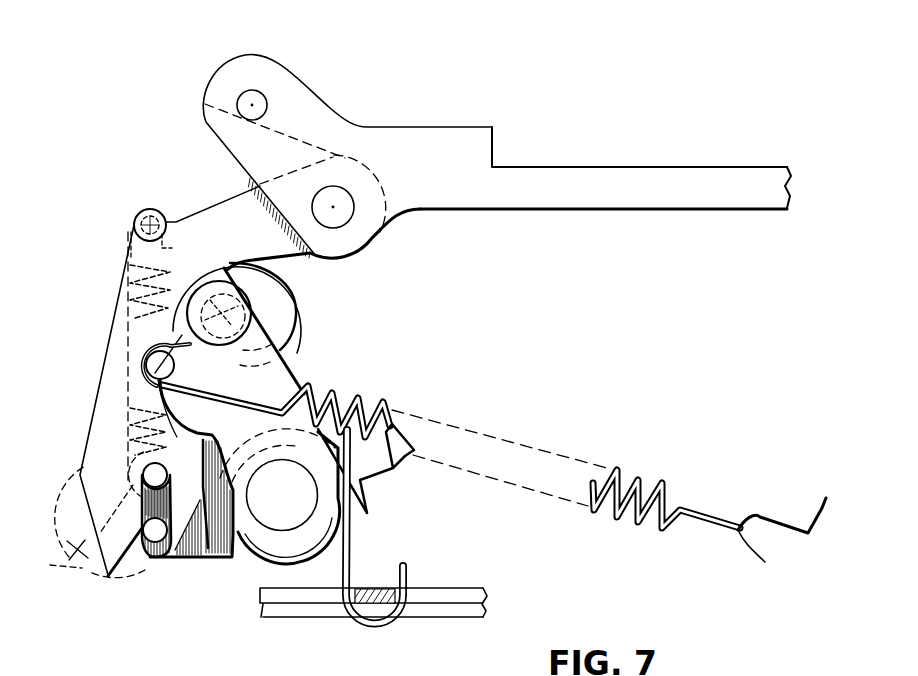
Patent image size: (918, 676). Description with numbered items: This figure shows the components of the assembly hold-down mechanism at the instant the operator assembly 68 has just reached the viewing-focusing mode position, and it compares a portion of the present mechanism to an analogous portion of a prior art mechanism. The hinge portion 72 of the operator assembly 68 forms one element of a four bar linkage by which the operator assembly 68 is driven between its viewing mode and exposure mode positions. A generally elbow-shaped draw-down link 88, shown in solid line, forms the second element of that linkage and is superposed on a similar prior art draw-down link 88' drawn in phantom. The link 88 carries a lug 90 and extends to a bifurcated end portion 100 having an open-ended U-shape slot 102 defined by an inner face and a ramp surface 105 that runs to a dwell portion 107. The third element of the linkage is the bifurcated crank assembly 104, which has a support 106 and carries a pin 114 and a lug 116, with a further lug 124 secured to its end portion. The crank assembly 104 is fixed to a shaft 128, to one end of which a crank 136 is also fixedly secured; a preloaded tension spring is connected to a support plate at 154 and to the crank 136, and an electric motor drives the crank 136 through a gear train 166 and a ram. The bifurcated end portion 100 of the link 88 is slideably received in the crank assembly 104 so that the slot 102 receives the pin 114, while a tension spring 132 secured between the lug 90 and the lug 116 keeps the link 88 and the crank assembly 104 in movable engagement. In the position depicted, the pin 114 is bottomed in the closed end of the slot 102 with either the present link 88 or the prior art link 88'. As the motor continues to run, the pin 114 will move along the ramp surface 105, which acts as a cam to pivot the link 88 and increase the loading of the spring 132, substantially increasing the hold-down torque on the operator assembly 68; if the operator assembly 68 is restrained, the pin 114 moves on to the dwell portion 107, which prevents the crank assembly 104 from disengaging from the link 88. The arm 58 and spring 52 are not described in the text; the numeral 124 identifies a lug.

The hinge portion 72 is at (232, 52).
The operator assembly 68 is at (547, 150).
The arm 58 is at (692, 176).
The lug 90 is at (150, 210).
The draw-down link 88 is at (107, 400).
The prior art draw-down link 88' is at (56, 556).
The tension spring 132 is at (125, 268).
The gear train 166 is at (226, 278).
The crank 136 is at (274, 373).
The U-shape slot 102 is at (178, 560).
The support 106 is at (170, 513).
The bifurcated crank assembly 104 is at (140, 496).
The ramp surface 105 is at (158, 506).
The pin 114 is at (166, 466).
The lug 116 is at (153, 544).
The dwell portion 107 is at (111, 578).
The bifurcated end portion 100 is at (78, 485).
The lug 124 is at (366, 468).
The shaft 128 is at (297, 513).
The tension spring 52 is at (639, 480).
The connection point 154 is at (777, 517).